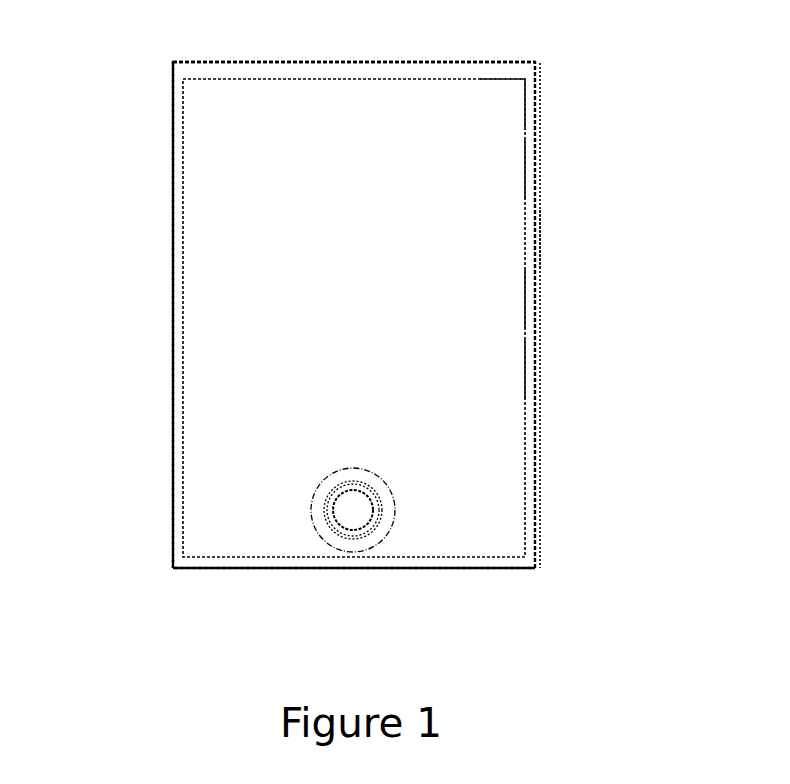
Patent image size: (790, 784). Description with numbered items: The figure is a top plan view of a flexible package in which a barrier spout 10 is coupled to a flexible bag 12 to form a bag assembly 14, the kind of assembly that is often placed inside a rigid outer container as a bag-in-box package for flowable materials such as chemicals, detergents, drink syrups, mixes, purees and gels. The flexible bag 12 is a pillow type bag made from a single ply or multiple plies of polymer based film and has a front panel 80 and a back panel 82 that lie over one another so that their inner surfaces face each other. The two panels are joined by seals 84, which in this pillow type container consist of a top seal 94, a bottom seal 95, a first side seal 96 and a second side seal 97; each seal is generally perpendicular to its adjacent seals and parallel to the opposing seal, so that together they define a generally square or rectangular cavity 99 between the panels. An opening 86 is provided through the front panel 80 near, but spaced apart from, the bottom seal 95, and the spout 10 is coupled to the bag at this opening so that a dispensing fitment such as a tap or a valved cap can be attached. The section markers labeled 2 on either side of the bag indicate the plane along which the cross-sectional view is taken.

The assembly 10 is at (331, 546).
The inner frame 12 is at (205, 110).
The outer body 14 is at (128, 226).
The side edge 80 is at (532, 302).
The outer flange 82 is at (557, 239).
The side layer 84 is at (532, 170).
The circular port 86 is at (381, 521).
The top edge 94 is at (342, 66).
The bottom edge 95 is at (510, 550).
The left edge 96 is at (165, 368).
The right edge 97 is at (534, 372).
The corner region 99 is at (506, 114).
The section line 2- 2 is at (160, 508).